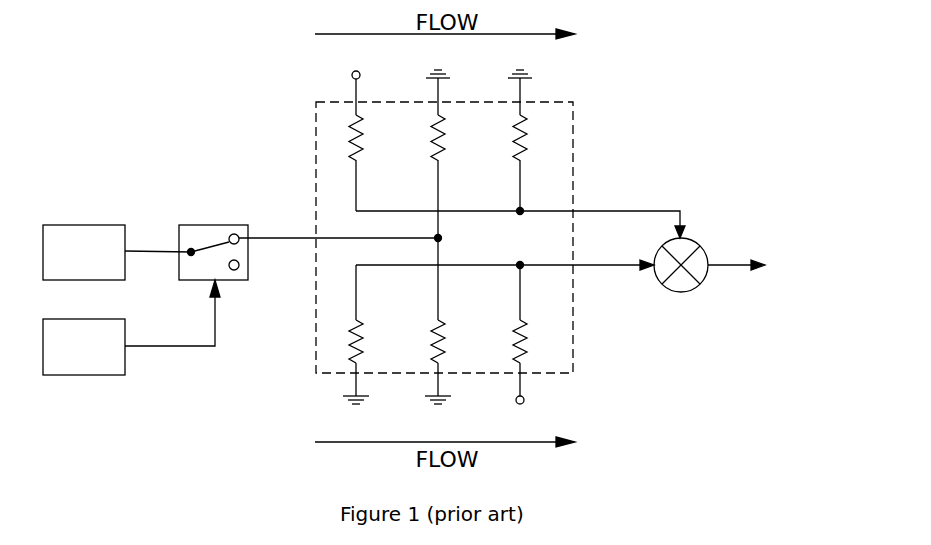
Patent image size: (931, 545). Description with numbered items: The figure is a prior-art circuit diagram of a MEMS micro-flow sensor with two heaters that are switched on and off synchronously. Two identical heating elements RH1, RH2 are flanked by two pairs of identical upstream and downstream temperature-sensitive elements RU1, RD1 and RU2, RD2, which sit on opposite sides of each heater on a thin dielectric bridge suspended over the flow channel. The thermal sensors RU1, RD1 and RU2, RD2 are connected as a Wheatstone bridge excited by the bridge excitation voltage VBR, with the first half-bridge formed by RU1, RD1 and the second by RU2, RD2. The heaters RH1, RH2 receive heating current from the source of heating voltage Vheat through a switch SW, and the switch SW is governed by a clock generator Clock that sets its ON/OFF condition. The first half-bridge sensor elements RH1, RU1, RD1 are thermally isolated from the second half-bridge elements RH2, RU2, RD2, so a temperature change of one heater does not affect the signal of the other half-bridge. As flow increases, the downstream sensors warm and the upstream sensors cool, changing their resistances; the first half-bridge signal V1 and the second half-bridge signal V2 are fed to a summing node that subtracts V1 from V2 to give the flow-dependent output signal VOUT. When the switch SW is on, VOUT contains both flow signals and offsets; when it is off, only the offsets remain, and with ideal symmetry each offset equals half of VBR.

The source of heating voltage Vheat is at (117, 252).
The switch SW is at (308, 239).
The clock generator Clock is at (131, 327).
The bridge excitation voltage VBR is at (438, 238).
The upstream temperature-sensitive element RU1 is at (374, 145).
The heating element RH1 is at (454, 195).
The downstream temperature-sensitive element RD1 is at (536, 140).
The upstream temperature-sensitive element RU2 is at (371, 334).
The heating element RH2 is at (453, 362).
The downstream temperature-sensitive element RD2 is at (538, 330).
The first half-bridge signal V1 is at (520, 212).
The second half-bridge signal V2 is at (505, 253).
The output signal VOUT is at (727, 285).